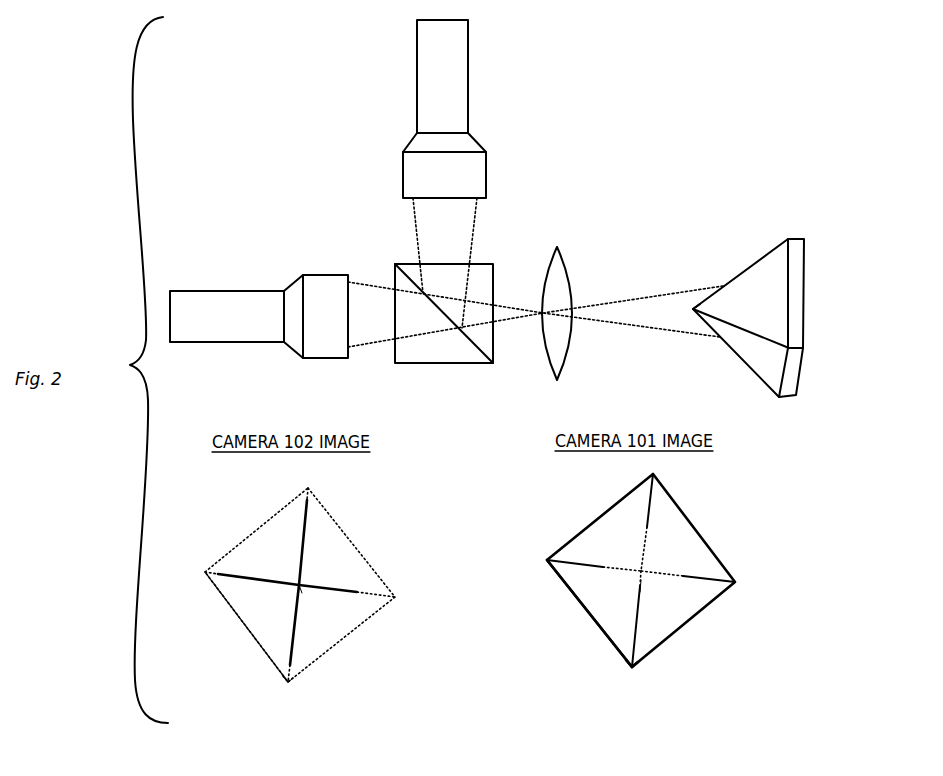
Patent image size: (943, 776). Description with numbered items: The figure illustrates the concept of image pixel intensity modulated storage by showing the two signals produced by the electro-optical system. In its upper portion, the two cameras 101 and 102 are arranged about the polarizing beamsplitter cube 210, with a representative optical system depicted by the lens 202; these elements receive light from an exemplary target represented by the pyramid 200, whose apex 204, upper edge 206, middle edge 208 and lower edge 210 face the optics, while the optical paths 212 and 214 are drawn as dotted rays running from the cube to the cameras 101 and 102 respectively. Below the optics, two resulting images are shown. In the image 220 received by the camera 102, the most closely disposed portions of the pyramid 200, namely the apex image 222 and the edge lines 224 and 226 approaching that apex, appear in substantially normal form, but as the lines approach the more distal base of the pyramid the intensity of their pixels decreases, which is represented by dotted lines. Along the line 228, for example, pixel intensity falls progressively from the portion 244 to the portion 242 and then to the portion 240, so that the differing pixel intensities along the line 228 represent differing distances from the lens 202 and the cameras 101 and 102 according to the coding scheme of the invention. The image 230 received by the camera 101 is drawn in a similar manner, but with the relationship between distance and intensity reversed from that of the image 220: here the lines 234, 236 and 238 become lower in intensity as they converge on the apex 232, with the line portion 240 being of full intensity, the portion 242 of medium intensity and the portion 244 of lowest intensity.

The camera 101 is at (417, 65).
The camera 102 is at (198, 291).
The pyramid 200 is at (741, 297).
The lens 202 is at (568, 267).
The prism apex 204 is at (693, 309).
The prism upper edge 206 is at (738, 273).
The prism middle edge 208 is at (753, 333).
The polarizing beamsplitter cube 210 is at (460, 363).
The optical path to first camera 212 is at (477, 213).
The optical path to second camera 214 is at (378, 347).
The image received by camera 102 220 is at (415, 492).
The apex image 222 is at (293, 588).
The upper vertical edge image 224 is at (307, 522).
The right horizontal edge image 226 is at (357, 591).
The line 228 is at (294, 636).
The image received by camera 101 230 is at (757, 478).
The apex 232 is at (637, 572).
The line 234 is at (647, 510).
The line 236 is at (699, 578).
The line 238 is at (638, 630).
The line portion 240 is at (292, 668).
The line portion 242 is at (293, 617).
The line portion 244 is at (300, 593).